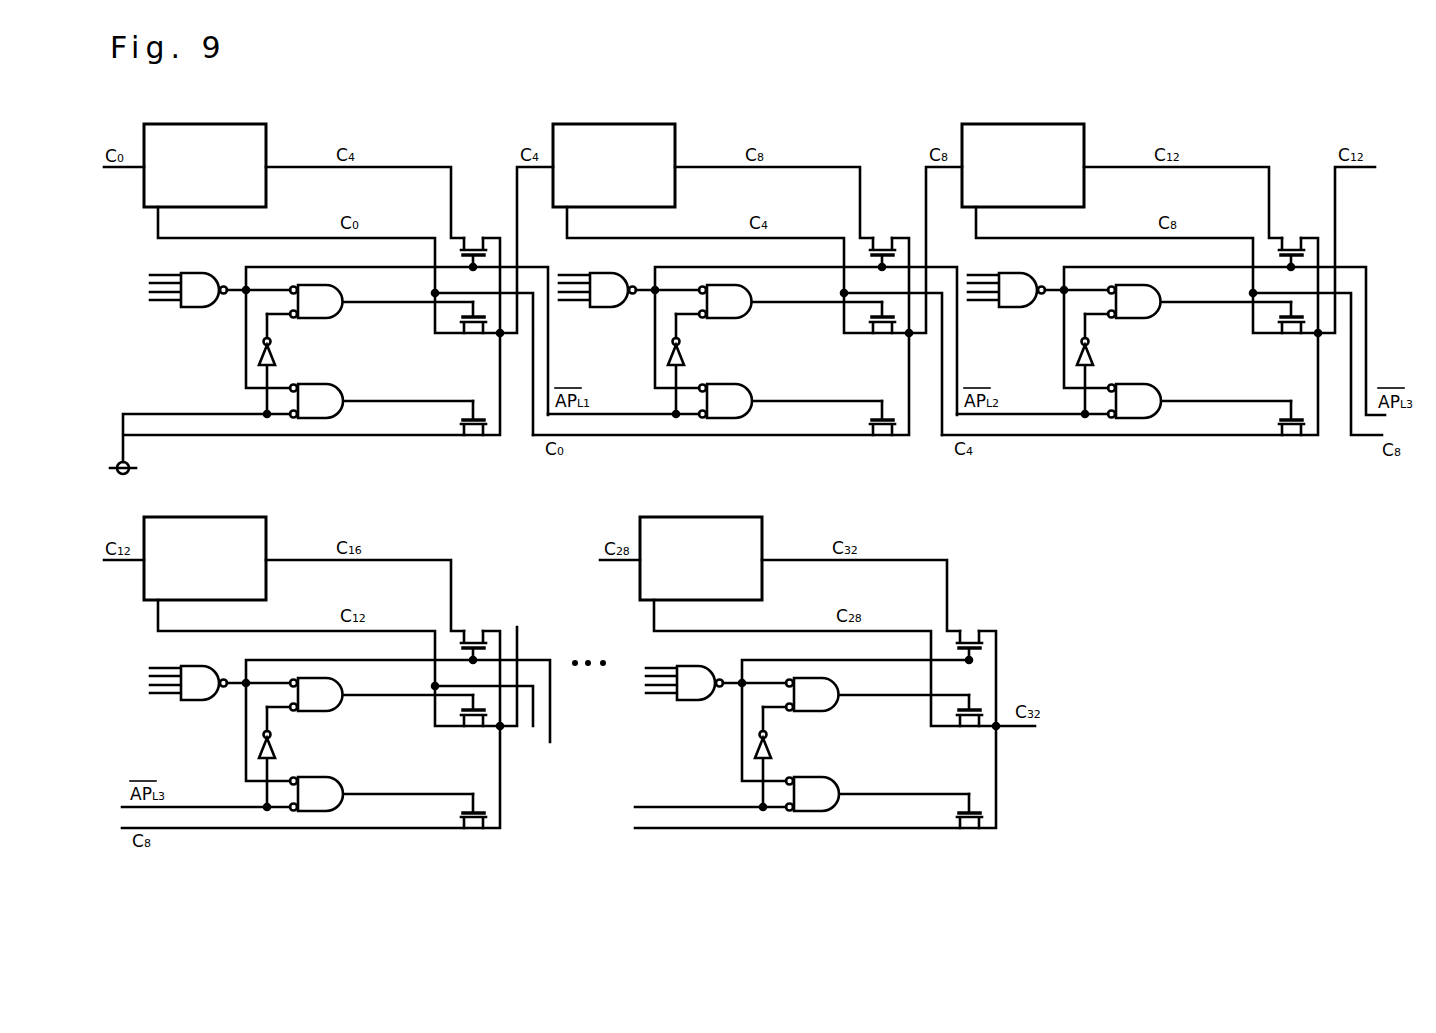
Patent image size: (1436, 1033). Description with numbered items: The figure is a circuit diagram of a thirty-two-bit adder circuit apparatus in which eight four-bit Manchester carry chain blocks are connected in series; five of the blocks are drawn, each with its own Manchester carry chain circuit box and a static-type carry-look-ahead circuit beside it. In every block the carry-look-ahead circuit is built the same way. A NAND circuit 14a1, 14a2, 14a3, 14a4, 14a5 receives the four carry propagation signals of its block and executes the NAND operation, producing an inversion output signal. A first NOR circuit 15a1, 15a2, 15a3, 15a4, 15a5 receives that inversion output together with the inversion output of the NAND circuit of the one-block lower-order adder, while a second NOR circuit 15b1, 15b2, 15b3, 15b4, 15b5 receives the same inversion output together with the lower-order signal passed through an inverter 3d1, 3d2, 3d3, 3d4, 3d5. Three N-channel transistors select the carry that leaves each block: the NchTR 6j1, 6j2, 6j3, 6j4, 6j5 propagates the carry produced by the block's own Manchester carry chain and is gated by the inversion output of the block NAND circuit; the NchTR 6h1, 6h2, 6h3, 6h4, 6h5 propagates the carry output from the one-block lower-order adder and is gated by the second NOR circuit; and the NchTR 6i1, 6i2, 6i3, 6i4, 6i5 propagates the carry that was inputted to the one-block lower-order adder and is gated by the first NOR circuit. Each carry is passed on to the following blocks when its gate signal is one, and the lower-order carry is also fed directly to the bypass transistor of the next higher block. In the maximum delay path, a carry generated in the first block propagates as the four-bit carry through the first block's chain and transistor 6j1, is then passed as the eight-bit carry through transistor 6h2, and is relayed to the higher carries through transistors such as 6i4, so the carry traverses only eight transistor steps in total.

The NAND circuit 14a1 is at (200, 308).
The NOR circuit 15b1 is at (334, 318).
The NOR circuit 15a1 is at (340, 385).
The inverter 3d1 is at (276, 357).
The NchTR 6j1 is at (473, 236).
The NchTR 6h1 is at (470, 338).
The NchTR 6i1 is at (472, 440).
The NAND circuit 14a2 is at (607, 319).
The NOR circuit 15b2 is at (790, 317).
The NOR circuit 15a2 is at (790, 388).
The inverter 3d2 is at (710, 365).
The NchTR 6j2 is at (882, 223).
The NchTR 6h2 is at (872, 342).
The NchTR 6i2 is at (878, 436).
The NAND circuit 14a3 is at (1016, 319).
The NOR circuit 15b3 is at (1199, 317).
The NOR circuit 15a3 is at (1199, 388).
The inverter 3d3 is at (1119, 365).
The NchTR 6j3 is at (1291, 223).
The NchTR 6h3 is at (1281, 342).
The NchTR 6i3 is at (1287, 436).
The NAND circuit 14a4 is at (198, 712).
The NOR circuit 15b4 is at (381, 710).
The NOR circuit 15a4 is at (381, 781).
The inverter 3d4 is at (301, 758).
The NchTR 6j4 is at (473, 616).
The NchTR 6h4 is at (463, 735).
The NchTR 6i4 is at (469, 829).
The NAND circuit 14a5 is at (694, 712).
The NOR circuit 15b5 is at (877, 710).
The NOR circuit 15a5 is at (877, 781).
The inverter 3d5 is at (797, 758).
The NchTR 6j5 is at (969, 616).
The NchTR 6h5 is at (959, 735).
The NchTR 6i5 is at (965, 829).